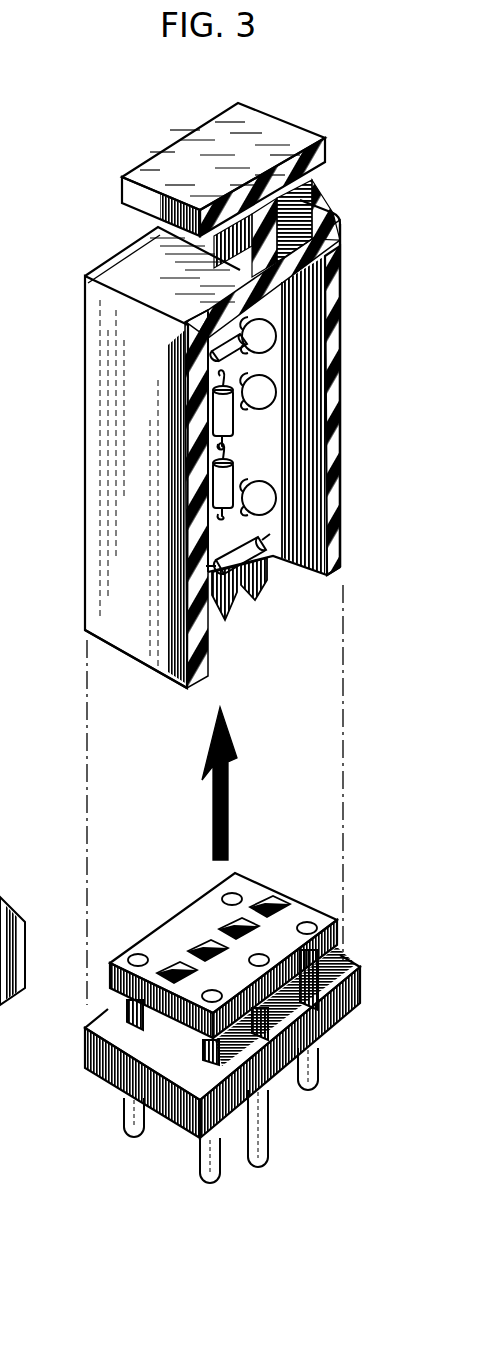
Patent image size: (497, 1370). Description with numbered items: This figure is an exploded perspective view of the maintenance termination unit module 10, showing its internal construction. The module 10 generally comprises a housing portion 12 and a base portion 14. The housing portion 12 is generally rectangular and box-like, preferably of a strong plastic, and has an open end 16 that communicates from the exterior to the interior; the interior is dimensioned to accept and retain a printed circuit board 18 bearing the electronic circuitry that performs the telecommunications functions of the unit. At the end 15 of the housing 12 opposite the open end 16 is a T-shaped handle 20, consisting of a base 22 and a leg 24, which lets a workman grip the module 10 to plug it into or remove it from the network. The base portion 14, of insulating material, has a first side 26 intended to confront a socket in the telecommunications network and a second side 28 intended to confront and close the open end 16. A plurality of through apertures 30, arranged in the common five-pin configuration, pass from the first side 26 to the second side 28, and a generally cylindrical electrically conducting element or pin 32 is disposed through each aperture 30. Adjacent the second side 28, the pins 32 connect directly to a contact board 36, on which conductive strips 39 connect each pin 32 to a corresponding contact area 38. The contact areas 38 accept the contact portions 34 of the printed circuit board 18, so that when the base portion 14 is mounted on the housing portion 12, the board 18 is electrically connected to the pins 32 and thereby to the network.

The maintenance termination unit module 10 is at (50, 493).
The housing portion 12 is at (197, 453).
The base portion 14 is at (205, 1091).
The end of the housing 15 is at (162, 264).
The open end 16 is at (196, 688).
The printed circuit board 18 is at (267, 482).
The T-shaped handle 20 is at (206, 164).
The base of the handle 22 is at (107, 120).
The leg of the handle 24 is at (292, 204).
The first side 26 is at (160, 1112).
The second side 28 is at (106, 1033).
The through apertures 30 is at (122, 1028).
The electrically conducting element 32 is at (124, 1120).
The contact portions 34 is at (260, 598).
The contact board 36 is at (215, 932).
The contact areas 38 is at (238, 930).
The conductive strips 39 is at (230, 897).